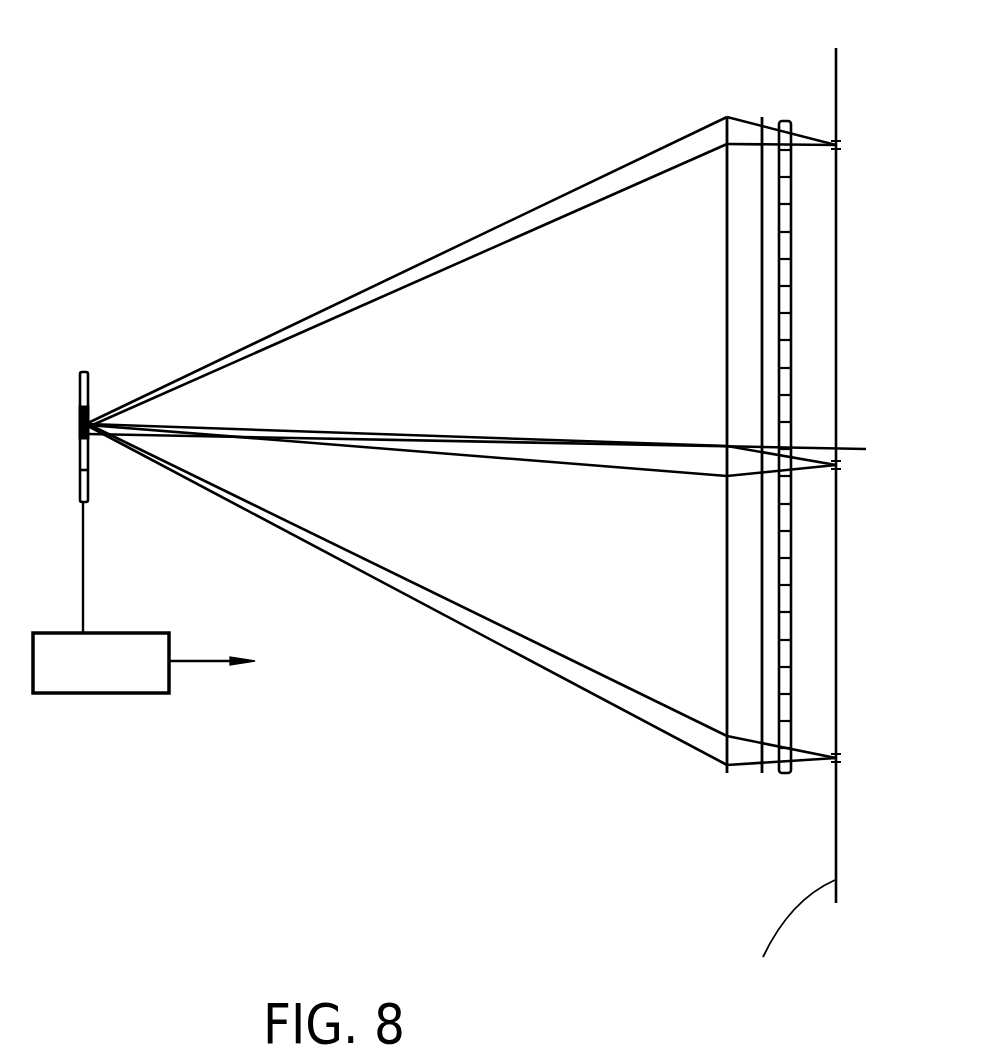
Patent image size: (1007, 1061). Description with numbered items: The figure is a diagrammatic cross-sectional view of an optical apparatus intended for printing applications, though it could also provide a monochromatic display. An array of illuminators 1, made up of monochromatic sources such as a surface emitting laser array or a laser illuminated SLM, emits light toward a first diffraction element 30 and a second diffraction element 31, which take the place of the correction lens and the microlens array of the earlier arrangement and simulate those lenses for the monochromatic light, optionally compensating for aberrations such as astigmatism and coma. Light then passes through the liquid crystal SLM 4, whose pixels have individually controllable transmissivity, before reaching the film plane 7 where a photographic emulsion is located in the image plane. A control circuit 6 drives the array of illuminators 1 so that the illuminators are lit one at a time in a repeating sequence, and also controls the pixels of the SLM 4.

The array of illuminators 1 is at (77, 380).
The SLM 4 is at (785, 118).
The control circuit 6 is at (113, 695).
The film plane 7 is at (845, 447).
The diffraction element 30 is at (725, 700).
The diffraction element 31 is at (760, 703).